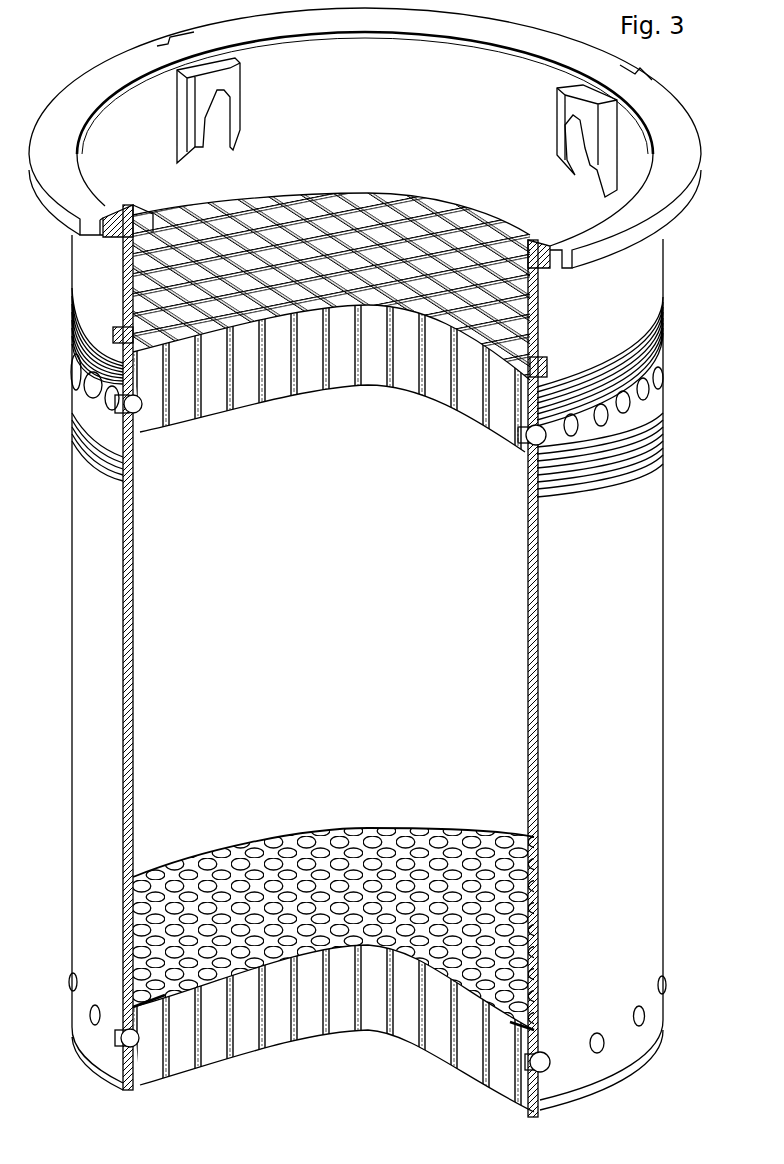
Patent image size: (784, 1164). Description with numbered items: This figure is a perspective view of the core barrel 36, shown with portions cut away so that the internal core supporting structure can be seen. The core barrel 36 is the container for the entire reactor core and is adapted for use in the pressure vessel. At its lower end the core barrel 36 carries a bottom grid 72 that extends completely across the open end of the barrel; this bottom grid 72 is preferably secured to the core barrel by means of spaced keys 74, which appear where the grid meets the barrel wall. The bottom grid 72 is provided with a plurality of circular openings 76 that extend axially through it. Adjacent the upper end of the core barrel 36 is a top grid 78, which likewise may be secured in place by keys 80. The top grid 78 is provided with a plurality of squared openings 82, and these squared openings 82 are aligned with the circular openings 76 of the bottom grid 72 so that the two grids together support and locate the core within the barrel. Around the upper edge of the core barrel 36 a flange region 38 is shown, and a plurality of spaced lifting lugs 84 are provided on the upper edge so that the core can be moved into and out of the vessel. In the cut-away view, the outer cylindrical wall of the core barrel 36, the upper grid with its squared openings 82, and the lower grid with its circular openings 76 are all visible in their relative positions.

The core barrel 36 is at (655, 260).
The top flange 38 is at (672, 193).
The lifting lugs 84 is at (235, 95).
The squared openings 82 is at (321, 387).
The top grid 78 is at (420, 397).
The keys 80 is at (523, 445).
The bottom grid 72 is at (348, 1032).
The circular openings 76 is at (540, 1000).
The keys 74 is at (547, 1055).